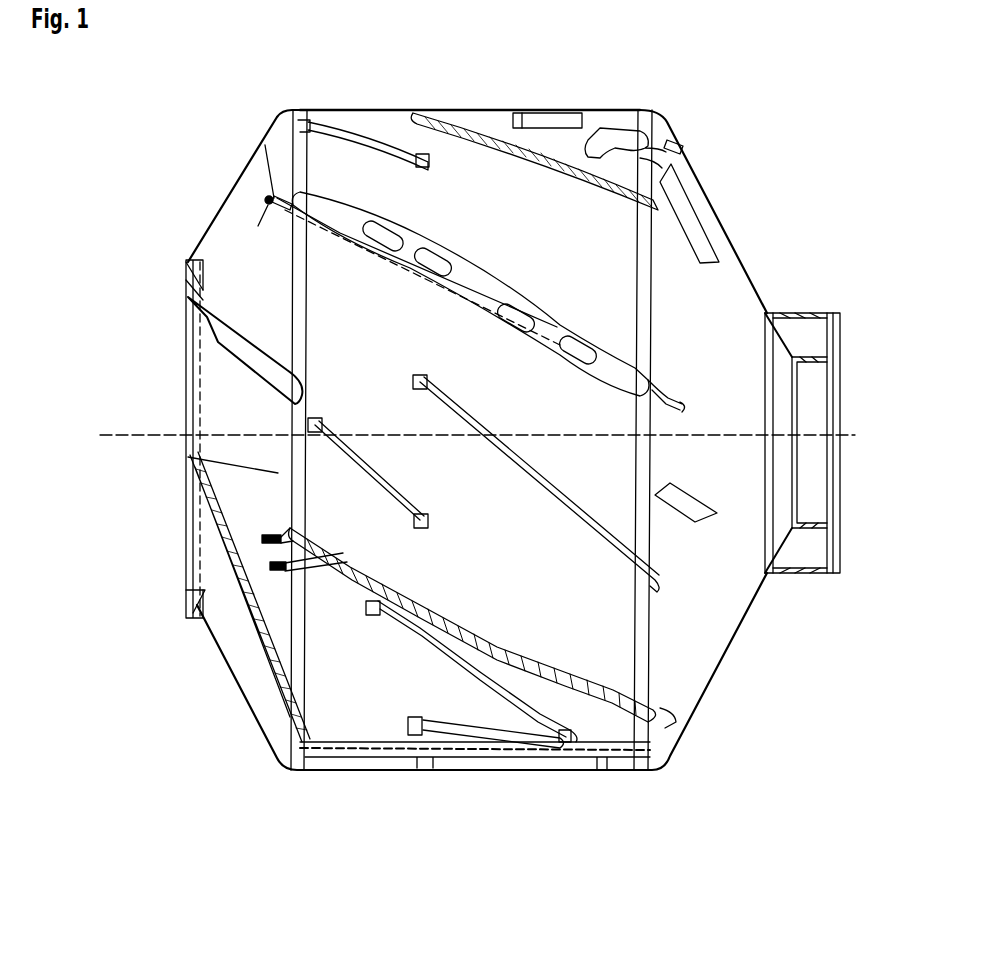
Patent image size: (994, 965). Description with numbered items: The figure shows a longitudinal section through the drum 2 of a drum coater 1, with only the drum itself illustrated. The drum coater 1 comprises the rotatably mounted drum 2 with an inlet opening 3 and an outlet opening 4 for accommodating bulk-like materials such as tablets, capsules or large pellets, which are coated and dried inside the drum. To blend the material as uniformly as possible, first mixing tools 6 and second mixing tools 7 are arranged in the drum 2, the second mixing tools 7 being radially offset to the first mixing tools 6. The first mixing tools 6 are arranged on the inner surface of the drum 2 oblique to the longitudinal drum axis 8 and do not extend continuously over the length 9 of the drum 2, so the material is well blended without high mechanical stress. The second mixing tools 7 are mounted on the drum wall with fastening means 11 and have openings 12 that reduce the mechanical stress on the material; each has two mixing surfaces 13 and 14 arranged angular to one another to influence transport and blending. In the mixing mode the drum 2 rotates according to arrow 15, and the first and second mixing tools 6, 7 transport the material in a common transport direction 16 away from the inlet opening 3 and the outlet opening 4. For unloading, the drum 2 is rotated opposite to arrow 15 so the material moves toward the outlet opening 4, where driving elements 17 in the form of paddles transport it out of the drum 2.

The drum coater 1 is at (110, 118).
The drum 2 is at (728, 232).
The inlet opening 3 is at (183, 362).
The outlet opening 4 is at (802, 443).
The first mixing tools 6 is at (407, 112).
The second mixing tools 7 is at (622, 352).
The longitudinal drum axis 8 is at (465, 436).
The length of the drum 9 is at (650, 898).
The fastening means 11 is at (667, 148).
The openings 12 is at (277, 198).
The mixing surface 13 is at (468, 272).
The mixing surface 14 is at (557, 327).
The arrow 15 is at (122, 160).
The transport direction 16 is at (365, 802).
The driving elements 17 is at (235, 337).